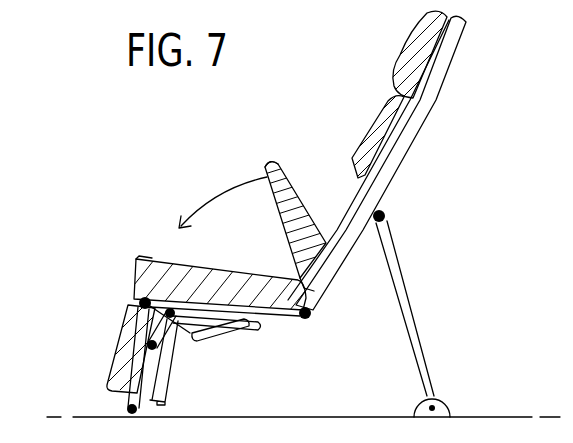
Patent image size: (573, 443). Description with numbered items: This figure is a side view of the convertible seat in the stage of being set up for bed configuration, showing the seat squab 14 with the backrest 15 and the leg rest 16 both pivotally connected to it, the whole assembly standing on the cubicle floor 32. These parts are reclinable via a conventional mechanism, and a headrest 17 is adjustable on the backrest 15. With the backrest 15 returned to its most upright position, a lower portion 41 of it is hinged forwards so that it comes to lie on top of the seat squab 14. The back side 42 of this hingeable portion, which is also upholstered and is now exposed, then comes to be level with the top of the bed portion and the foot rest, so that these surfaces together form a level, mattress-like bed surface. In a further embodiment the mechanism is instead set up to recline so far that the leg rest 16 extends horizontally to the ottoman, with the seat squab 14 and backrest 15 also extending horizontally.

The seat squab 14 is at (133, 274).
The backrest 15 is at (380, 111).
The leg rest 16 is at (122, 336).
The headrest 17 is at (414, 40).
The cubicle floor 32 is at (505, 416).
The lower portion 41 is at (279, 217).
The back side 42 is at (300, 192).